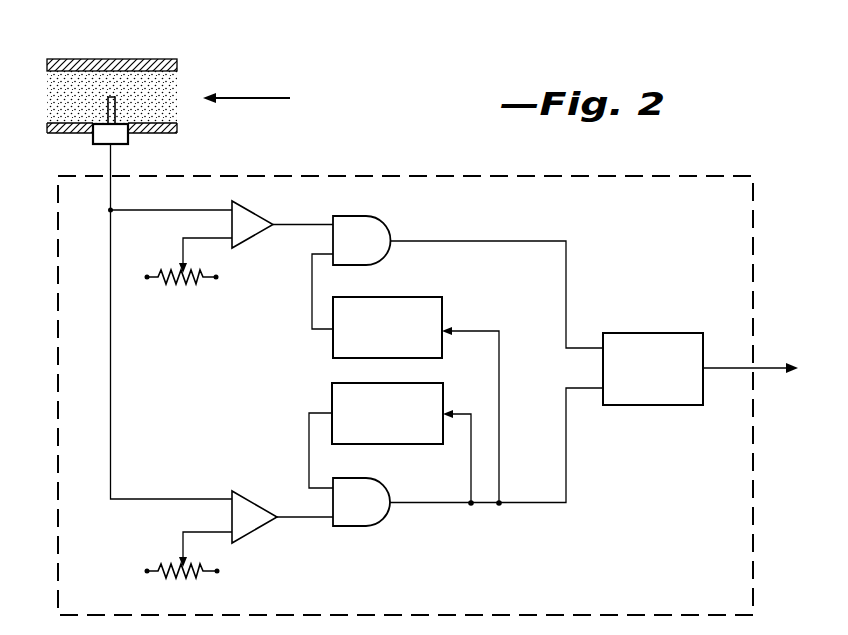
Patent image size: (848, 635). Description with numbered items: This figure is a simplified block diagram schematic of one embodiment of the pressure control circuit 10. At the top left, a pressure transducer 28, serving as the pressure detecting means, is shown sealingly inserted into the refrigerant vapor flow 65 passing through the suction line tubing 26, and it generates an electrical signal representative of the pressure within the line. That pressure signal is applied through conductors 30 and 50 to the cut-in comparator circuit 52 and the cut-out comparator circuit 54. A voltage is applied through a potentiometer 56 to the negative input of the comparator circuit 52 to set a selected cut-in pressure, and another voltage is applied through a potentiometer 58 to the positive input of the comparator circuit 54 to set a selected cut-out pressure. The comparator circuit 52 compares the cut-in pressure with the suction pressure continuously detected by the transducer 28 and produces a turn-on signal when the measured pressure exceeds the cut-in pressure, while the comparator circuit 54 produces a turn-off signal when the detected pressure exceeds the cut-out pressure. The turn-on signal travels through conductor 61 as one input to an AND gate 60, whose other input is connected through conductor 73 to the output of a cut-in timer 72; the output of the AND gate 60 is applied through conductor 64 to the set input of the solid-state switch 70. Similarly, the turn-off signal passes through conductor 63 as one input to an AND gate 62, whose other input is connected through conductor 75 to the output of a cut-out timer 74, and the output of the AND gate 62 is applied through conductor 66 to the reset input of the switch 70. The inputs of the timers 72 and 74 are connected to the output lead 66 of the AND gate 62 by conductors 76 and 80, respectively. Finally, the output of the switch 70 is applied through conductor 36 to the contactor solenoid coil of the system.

The pressure control circuit 10 is at (670, 172).
The suction line tubing 26 is at (67, 60).
The pressure transducer 28 is at (108, 96).
The conductor 30 is at (107, 188).
The conductor 36 is at (765, 363).
The conductor 50 is at (139, 210).
The cut-in comparator circuit 52 is at (248, 210).
The cut-out comparator circuit 54 is at (247, 498).
The potentiometer 56 is at (175, 290).
The potentiometer 58 is at (175, 578).
The AND gate 60 is at (374, 216).
The conductor 61 is at (297, 229).
The AND gate 62 is at (379, 523).
The conductor 63 is at (303, 520).
The conductor 64 is at (507, 240).
The refrigerant vapor flow 65 is at (166, 93).
The conductor 66 is at (482, 507).
The solid-state switch 70 is at (658, 332).
The cut-in timer 72 is at (396, 297).
The conductor 73 is at (310, 292).
The cut-out timer 74 is at (404, 445).
The conductor 75 is at (308, 434).
The conductor 76 is at (501, 428).
The conductor 80 is at (472, 427).